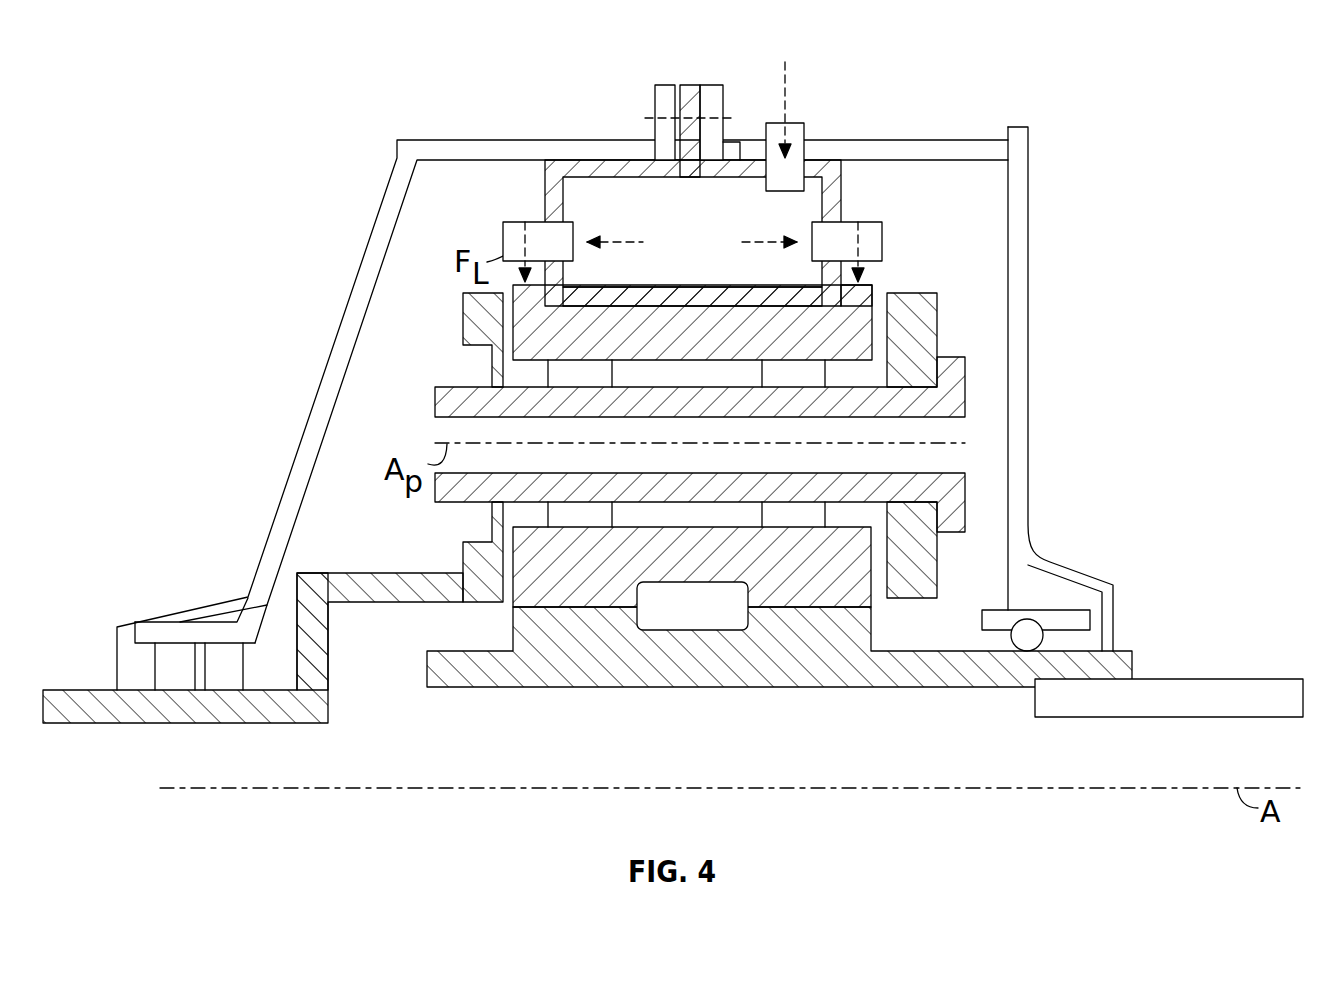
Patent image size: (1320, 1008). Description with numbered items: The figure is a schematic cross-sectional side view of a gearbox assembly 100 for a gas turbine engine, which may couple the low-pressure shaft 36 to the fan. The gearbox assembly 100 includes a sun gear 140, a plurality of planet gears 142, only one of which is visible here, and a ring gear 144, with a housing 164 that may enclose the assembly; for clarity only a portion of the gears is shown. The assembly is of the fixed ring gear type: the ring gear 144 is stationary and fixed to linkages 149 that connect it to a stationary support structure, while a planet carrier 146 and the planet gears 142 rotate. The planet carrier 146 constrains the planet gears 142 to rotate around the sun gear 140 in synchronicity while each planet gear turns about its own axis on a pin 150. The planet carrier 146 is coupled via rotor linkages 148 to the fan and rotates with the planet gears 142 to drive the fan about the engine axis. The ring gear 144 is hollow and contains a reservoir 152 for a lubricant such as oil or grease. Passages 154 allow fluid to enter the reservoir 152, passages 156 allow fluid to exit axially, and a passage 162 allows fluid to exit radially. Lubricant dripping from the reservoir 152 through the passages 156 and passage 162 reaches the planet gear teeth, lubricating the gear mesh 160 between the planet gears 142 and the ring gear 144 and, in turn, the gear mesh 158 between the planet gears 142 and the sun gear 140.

The gearbox assembly 100 is at (118, 91).
The low-pressure shaft 36 is at (1167, 718).
The sun gear 140 is at (862, 688).
The plurality of planet gears 142 is at (907, 317).
The ring gear 144 is at (842, 192).
The planet carrier 146 is at (477, 556).
The rotor linkages 148 is at (197, 713).
The linkages 149 is at (725, 95).
The pin 150 is at (965, 388).
The reservoir 152 is at (605, 203).
The passages 154 is at (807, 132).
The passages 156 is at (513, 222).
The gear mesh 158 is at (512, 607).
The gear mesh 160 is at (876, 281).
The passages 162 is at (700, 300).
The housing 164 is at (343, 323).